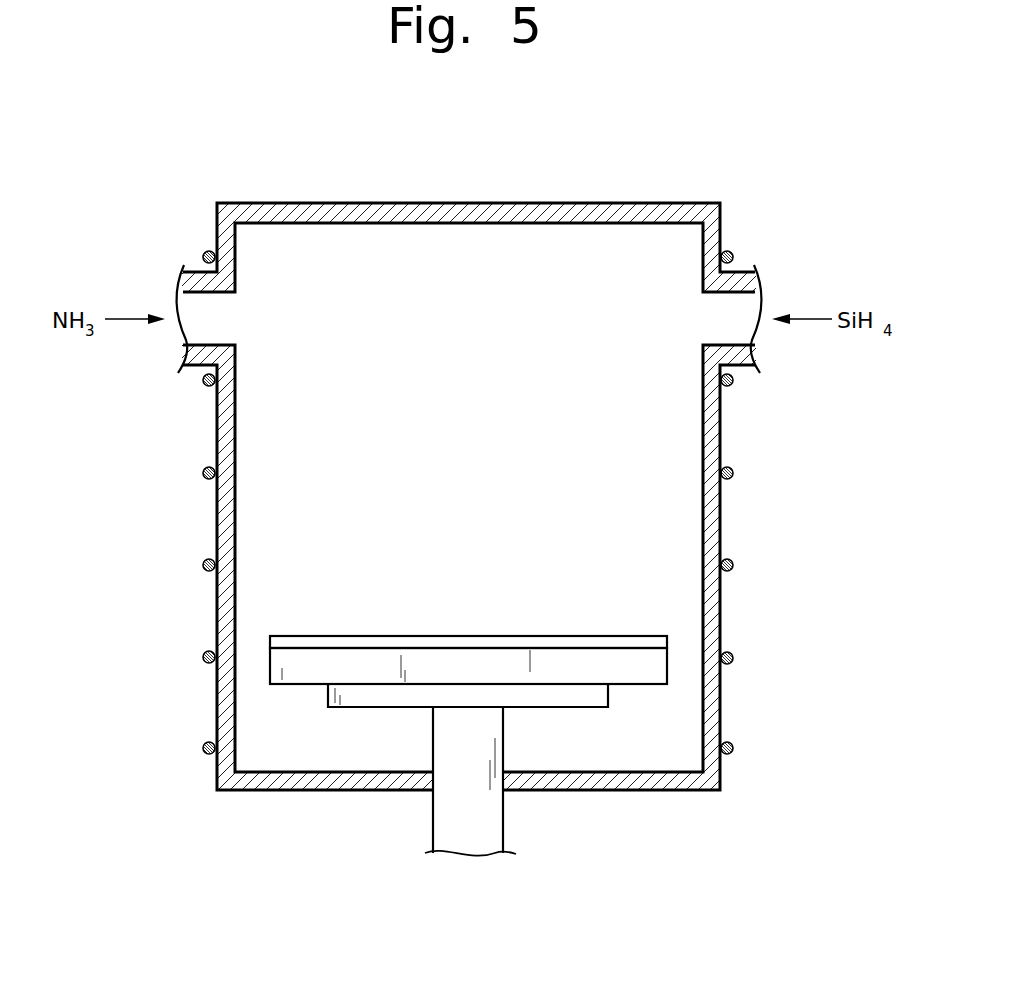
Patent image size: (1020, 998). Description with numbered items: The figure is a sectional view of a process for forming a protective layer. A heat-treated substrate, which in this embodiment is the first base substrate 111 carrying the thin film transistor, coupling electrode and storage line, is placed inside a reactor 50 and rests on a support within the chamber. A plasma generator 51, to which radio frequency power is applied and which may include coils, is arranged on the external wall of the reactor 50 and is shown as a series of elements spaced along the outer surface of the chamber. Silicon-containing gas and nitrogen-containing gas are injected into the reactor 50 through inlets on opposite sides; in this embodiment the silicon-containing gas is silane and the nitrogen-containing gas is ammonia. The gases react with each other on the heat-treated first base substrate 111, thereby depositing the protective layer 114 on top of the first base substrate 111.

The reactor 50 is at (713, 543).
The plasma generator 51 is at (733, 473).
The protective layer 114 is at (667, 640).
The first base substrate 111 is at (667, 663).